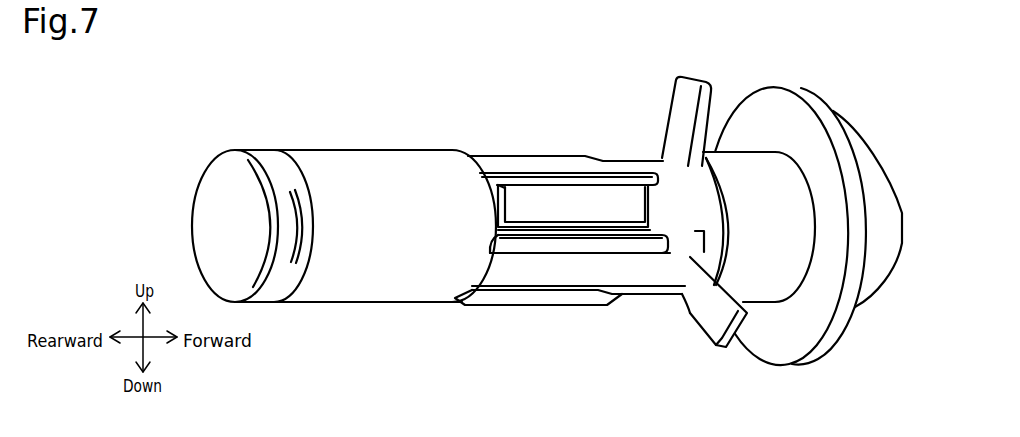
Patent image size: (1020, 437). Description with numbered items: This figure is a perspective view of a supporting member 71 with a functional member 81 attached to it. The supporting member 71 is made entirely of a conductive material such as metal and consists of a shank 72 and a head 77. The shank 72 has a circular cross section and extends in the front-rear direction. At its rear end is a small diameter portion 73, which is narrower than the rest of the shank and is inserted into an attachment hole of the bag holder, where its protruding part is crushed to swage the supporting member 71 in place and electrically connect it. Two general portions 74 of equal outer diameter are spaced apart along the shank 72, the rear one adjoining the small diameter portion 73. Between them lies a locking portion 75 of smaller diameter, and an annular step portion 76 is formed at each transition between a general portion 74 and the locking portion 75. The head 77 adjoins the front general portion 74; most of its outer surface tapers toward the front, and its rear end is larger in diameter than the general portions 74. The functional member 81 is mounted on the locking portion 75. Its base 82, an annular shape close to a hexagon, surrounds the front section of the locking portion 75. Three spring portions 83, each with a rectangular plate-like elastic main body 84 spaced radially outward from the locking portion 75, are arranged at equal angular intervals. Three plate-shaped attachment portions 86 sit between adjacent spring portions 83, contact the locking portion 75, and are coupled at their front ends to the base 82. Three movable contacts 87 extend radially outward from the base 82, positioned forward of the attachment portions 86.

The supporting member 71 is at (344, 193).
The shank 72 is at (408, 157).
The small diameter portion 73 is at (297, 249).
The general portions 74 is at (378, 291).
The locking portion 75 is at (559, 238).
The step portions 76 is at (710, 167).
The head 77 is at (868, 170).
The functional member 81 is at (757, 227).
The base 82 is at (700, 208).
The spring portions 83 is at (516, 276).
The elastic main body 84 is at (518, 205).
The attachment portions 86 is at (603, 167).
The movable contacts 87 is at (683, 102).